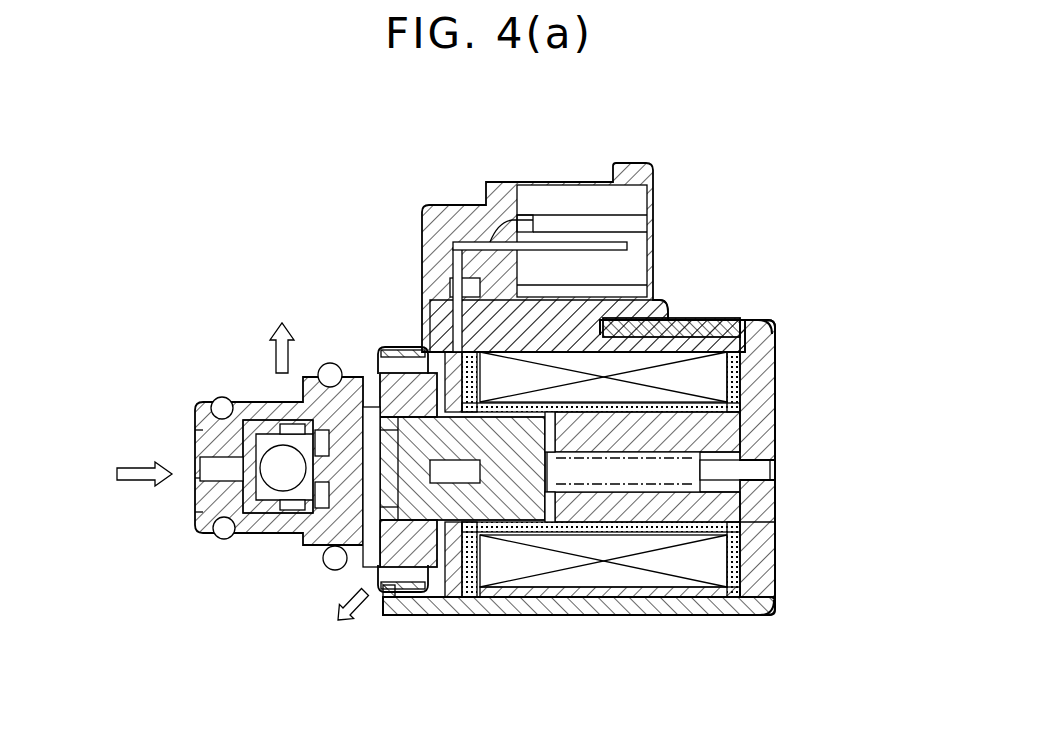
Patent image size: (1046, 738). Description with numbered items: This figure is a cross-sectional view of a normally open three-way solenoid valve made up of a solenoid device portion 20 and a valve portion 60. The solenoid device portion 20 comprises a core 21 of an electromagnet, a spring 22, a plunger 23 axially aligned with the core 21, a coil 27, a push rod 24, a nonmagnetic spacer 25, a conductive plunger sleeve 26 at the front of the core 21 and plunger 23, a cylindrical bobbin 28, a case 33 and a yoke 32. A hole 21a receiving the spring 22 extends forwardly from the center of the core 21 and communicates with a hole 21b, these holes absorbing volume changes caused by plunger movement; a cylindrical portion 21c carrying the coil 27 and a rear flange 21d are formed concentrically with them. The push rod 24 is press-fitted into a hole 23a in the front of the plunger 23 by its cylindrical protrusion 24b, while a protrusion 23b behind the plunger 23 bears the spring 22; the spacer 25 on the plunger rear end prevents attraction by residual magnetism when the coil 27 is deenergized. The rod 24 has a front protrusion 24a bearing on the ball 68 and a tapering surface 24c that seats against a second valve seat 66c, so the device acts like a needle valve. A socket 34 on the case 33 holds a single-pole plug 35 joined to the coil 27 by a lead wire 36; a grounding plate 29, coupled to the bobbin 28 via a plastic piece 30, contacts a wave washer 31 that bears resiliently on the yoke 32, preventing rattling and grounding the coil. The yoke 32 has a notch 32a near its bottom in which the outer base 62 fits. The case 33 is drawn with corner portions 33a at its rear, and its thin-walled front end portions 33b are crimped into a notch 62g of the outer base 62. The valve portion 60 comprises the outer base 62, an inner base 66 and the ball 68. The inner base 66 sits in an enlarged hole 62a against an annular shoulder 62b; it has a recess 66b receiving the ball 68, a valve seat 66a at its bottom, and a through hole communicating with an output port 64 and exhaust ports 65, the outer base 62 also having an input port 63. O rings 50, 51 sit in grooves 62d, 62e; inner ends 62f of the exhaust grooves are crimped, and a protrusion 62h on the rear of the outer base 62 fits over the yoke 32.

The solenoid device portion 20 is at (690, 153).
The valve portion 60 is at (229, 269).
The core 21 is at (770, 420).
The hole 21a is at (745, 497).
The hole 21b is at (764, 472).
The cylindrical portion 21c is at (748, 521).
The flange 21d is at (748, 555).
The spring 22 is at (770, 443).
The plunger 23 is at (512, 568).
The hole 23a is at (488, 575).
The protrusion 23b is at (606, 540).
The push rod 24 is at (312, 533).
The protrusion 24a is at (265, 535).
The cylindrical protrusion 24b is at (372, 573).
The tapering surface 24c is at (290, 535).
The spacer 25 is at (575, 505).
The plunger sleeve 26 is at (550, 530).
The coil 27 is at (770, 350).
The bobbin 28 is at (766, 386).
The grounding plate 29 is at (440, 326).
The plastic piece 30 is at (662, 590).
The wave washer 31 is at (423, 360).
The yoke 32 is at (445, 600).
The notch 32a is at (400, 618).
The case 33 is at (706, 610).
The case corner 33a is at (768, 318).
The thin-walled front end portions 33b is at (386, 612).
The socket 34 is at (659, 192).
The single-pole plug 35 is at (628, 243).
The lead wire 36 is at (482, 288).
The O ring 50 is at (222, 399).
The O ring 51 is at (326, 548).
The outer base 62 is at (215, 540).
The enlarged hole 62a is at (204, 448).
The annular shoulder 62b is at (236, 538).
The groove 62d is at (205, 410).
The groove 62e is at (313, 395).
The inner ends 62f is at (362, 392).
The notch 62g is at (382, 604).
The protrusion 62h is at (398, 605).
The input port 63 is at (195, 478).
The output port 64 is at (300, 411).
The exhaust ports 65 is at (378, 400).
The inner base 66 is at (248, 436).
The valve seat 66a is at (257, 518).
The recess 66b is at (214, 462).
The second valve seat 66c is at (307, 396).
The ball 68 is at (205, 518).